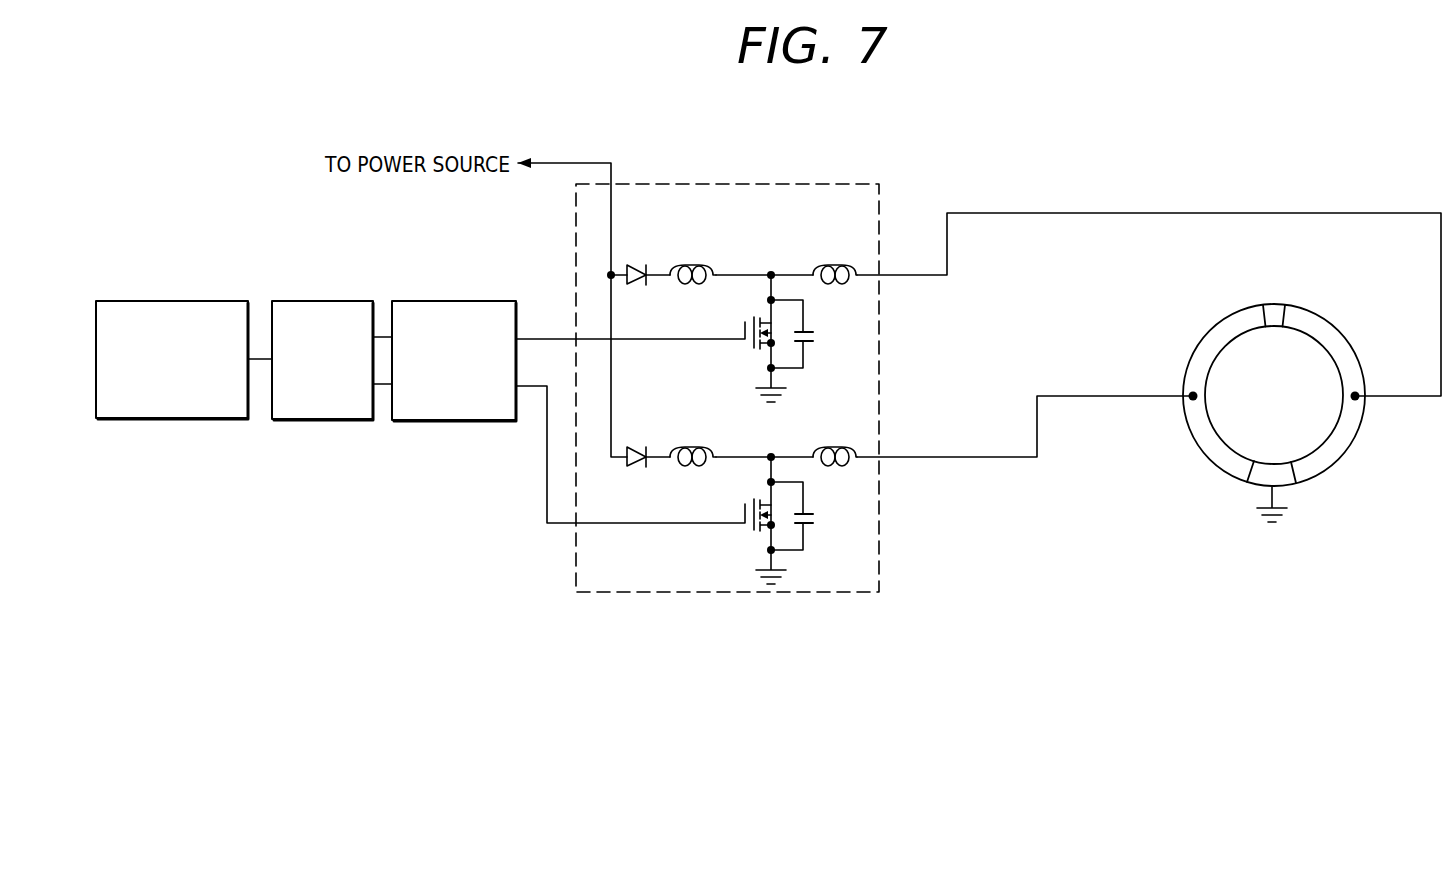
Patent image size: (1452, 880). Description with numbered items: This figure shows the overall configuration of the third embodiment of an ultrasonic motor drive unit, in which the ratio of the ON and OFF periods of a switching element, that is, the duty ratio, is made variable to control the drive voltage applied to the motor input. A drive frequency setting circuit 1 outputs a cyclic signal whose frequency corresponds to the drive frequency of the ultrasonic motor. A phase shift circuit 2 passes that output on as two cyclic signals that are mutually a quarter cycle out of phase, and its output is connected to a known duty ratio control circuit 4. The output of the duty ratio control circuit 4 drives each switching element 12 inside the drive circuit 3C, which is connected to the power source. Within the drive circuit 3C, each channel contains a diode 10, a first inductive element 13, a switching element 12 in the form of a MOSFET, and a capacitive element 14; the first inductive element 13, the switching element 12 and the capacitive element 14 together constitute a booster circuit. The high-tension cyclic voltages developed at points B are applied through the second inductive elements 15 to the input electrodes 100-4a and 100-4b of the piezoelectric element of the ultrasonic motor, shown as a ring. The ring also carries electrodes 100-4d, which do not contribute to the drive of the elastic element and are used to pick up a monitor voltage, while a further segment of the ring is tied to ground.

The drive frequency setting circuit 1 is at (226, 300).
The phase shift circuit 2 is at (355, 300).
The duty ratio control circuit 4 is at (501, 300).
The drive circuit 3C is at (848, 184).
The diode 10 is at (636, 263).
The first inductive element 13 is at (692, 263).
The second inductive element 15 is at (827, 263).
The point B is at (772, 270).
The switching element 12 is at (742, 318).
The capacitive element 14 is at (818, 336).
The electrode 100-4b is at (1196, 424).
The electrode 100-4d is at (1276, 307).
The electrode 100-4a is at (1313, 465).